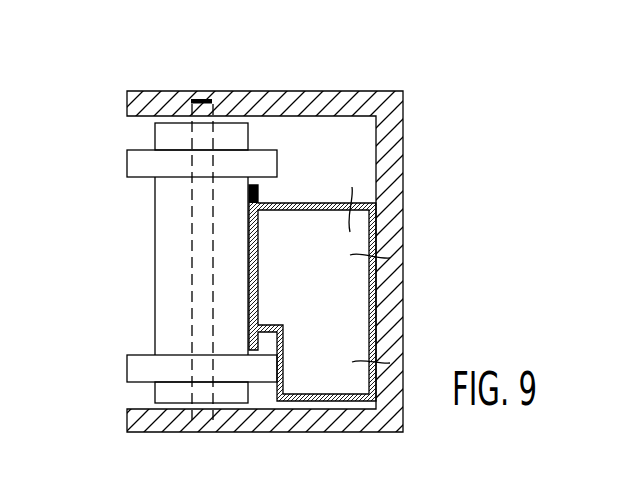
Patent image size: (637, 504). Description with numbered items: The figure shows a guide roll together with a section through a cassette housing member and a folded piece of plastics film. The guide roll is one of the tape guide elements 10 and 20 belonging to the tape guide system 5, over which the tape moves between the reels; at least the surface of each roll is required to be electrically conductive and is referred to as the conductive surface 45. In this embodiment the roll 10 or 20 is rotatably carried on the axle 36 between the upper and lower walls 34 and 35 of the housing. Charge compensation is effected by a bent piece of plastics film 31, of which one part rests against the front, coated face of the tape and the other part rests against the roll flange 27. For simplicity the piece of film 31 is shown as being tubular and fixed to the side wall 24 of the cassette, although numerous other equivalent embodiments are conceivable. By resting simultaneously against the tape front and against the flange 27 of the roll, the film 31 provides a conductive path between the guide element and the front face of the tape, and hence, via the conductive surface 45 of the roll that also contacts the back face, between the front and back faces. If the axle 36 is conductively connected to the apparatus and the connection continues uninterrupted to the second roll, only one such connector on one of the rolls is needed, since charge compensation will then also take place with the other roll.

The tape guide system 5 is at (257, 191).
The tape guide element 10 is at (172, 221).
The tape guide element 20 is at (202, 262).
The side wall 24 is at (390, 168).
The roll flange 27 is at (147, 368).
The bent piece of plastics film 31 is at (307, 201).
The upper wall 34 is at (272, 103).
The lower wall 35 is at (288, 418).
The axle 36 is at (196, 104).
The conductive surface 45 is at (155, 291).